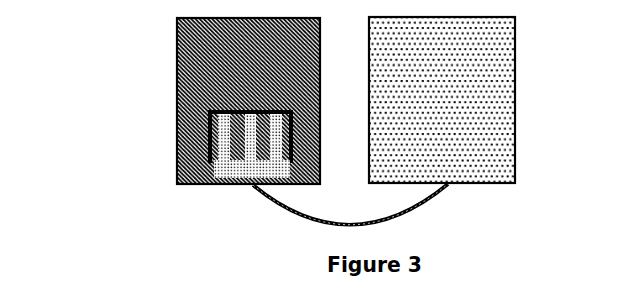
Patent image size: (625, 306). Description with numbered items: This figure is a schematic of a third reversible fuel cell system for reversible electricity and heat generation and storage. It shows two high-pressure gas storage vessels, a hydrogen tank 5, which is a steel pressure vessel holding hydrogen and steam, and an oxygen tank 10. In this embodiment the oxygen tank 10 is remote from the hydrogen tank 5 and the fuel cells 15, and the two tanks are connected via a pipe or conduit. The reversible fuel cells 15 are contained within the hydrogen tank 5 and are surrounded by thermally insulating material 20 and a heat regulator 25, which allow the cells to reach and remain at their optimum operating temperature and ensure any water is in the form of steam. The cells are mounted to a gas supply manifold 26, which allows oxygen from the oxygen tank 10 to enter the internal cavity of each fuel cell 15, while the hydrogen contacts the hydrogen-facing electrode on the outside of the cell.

The hydrogen tank 5 is at (177, 70).
The oxygen tank 10 is at (515, 121).
The reversible fuel cell 15 is at (194, 178).
The thermally insulating material 20 is at (208, 123).
The heat regulator 25 is at (227, 132).
The gas supply manifold 26 is at (233, 166).